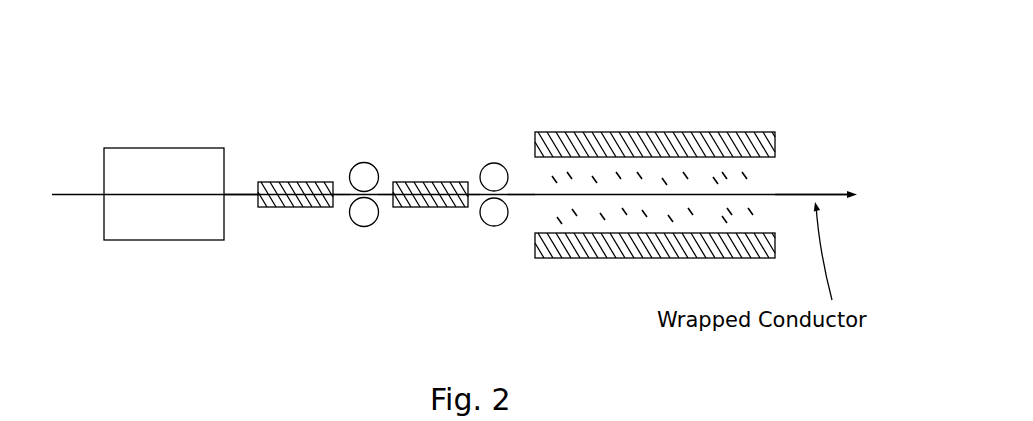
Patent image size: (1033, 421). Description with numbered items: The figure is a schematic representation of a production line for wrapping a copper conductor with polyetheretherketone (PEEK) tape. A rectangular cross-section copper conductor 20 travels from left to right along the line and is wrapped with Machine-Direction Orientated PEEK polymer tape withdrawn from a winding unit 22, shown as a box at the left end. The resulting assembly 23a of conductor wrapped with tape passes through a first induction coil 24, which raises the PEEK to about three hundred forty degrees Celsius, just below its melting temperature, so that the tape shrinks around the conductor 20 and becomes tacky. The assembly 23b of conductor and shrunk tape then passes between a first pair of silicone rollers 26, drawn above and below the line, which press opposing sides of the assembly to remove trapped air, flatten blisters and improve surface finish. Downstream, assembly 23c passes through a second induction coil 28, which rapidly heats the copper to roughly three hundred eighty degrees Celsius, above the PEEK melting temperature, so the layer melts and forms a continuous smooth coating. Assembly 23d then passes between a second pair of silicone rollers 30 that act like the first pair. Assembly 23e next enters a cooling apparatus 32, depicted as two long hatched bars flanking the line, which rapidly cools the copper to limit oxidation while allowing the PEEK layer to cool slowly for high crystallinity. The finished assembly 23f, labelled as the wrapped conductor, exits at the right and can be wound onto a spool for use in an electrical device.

The copper conductor 20 is at (87, 198).
The winding unit 22 is at (143, 147).
The assembly of conductor wrapped with tape 23a is at (250, 197).
The assembly comprising conductor and shrunk tape 23b is at (340, 193).
The assembly 23c is at (385, 192).
The assembly 23d is at (472, 192).
The assembly 23e is at (528, 208).
The assembly of non-oxidized copper insulated with crystalline PEEK layer 23f is at (808, 195).
The first induction coil 24 is at (265, 173).
The first pair of silicone rollers 26 is at (360, 170).
The second induction coil 28 is at (420, 178).
The second pair of silicone rollers 30 is at (495, 172).
The cooling apparatus 32 is at (563, 125).